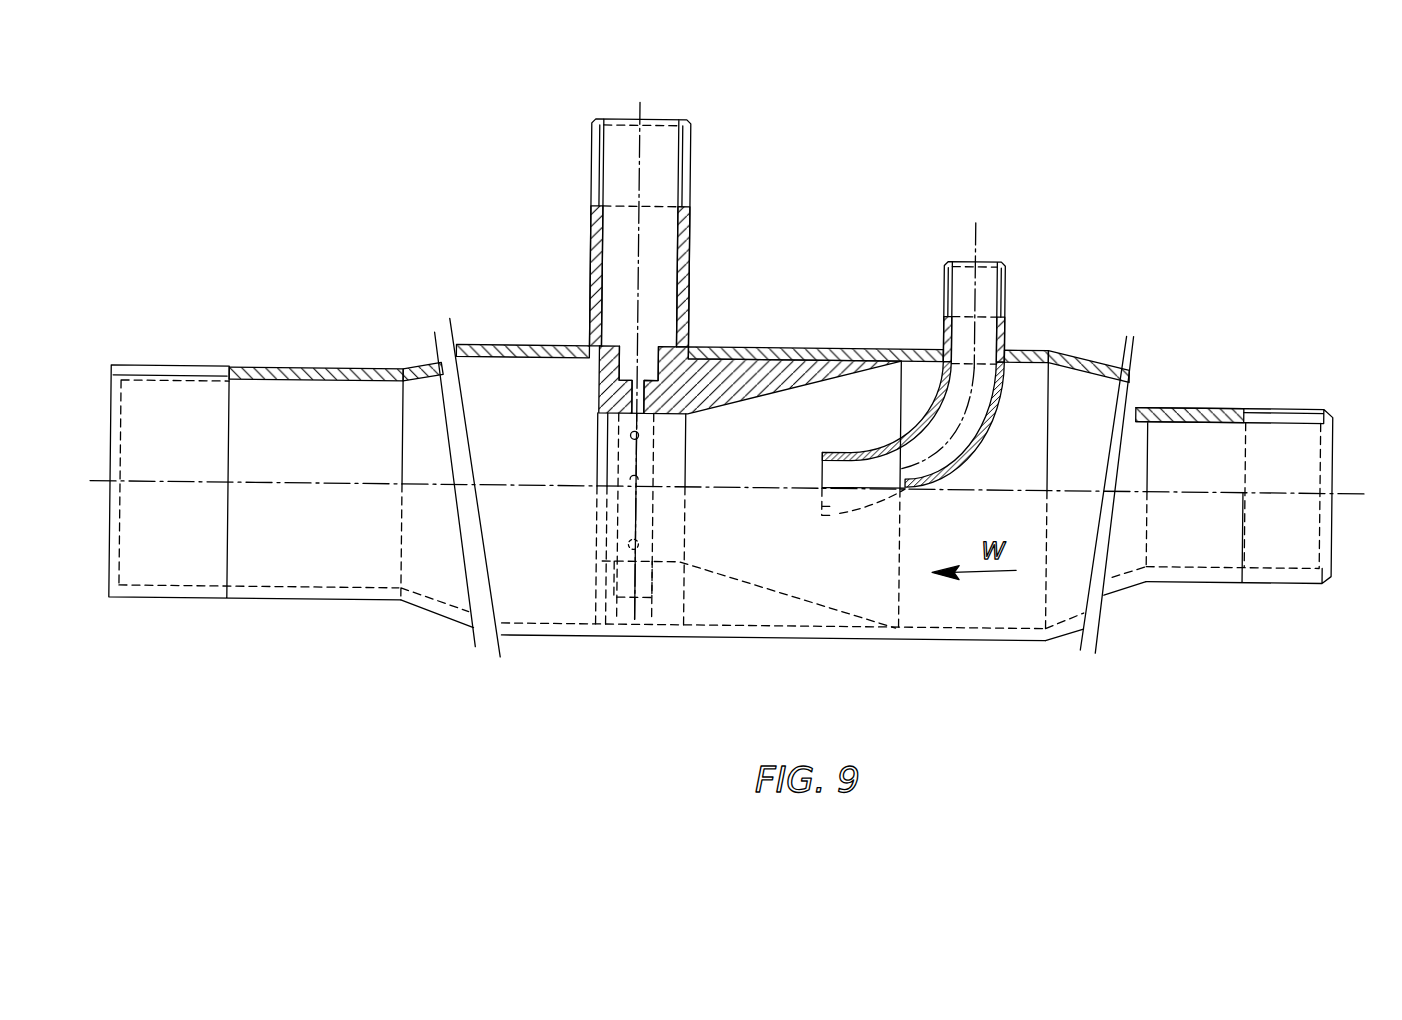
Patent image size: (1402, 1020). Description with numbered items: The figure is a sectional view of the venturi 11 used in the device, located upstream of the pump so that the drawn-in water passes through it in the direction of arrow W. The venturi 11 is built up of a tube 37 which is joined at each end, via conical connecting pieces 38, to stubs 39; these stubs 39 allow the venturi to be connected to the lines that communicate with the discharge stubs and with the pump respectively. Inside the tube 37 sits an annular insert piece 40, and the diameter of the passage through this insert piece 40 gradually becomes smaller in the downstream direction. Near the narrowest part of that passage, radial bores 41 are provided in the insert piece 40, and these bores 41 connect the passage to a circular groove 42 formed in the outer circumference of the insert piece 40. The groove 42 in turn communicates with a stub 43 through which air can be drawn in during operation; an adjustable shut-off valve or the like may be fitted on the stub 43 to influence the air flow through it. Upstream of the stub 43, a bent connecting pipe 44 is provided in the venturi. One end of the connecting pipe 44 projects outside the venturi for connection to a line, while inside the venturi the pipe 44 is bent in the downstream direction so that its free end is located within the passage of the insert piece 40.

The venturi 11 is at (820, 295).
The tube 37 is at (745, 345).
The conical connecting pieces 38 is at (440, 620).
The stubs 39 is at (284, 604).
The annular insert piece 40 is at (757, 390).
The radial bores 41 is at (630, 437).
The circular groove 42 is at (647, 367).
The stub 43 is at (688, 240).
The bent connecting pipe 44 is at (957, 463).